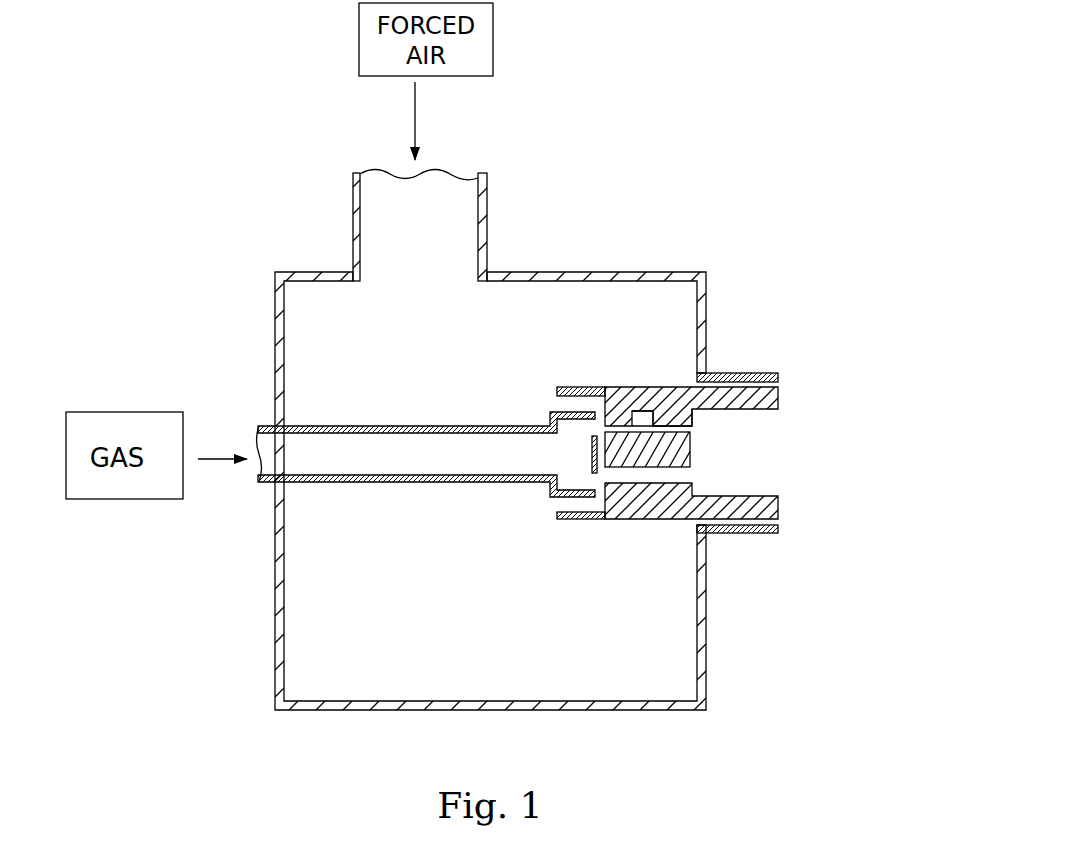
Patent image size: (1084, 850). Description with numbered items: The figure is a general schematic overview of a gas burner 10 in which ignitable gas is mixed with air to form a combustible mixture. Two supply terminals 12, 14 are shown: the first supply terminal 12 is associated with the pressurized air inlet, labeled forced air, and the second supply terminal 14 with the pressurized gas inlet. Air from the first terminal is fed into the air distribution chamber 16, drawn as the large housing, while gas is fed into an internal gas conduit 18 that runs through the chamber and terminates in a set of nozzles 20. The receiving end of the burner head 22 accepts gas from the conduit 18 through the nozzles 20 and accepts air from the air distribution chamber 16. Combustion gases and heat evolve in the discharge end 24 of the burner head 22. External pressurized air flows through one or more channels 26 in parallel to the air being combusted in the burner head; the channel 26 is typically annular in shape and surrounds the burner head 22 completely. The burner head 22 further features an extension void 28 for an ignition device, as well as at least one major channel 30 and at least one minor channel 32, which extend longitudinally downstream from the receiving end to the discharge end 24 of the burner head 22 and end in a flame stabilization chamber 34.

The gas burner 10 is at (587, 230).
The supply terminal 12 is at (383, 170).
The supply terminal 14 is at (256, 470).
The air distribution chamber 16 is at (303, 642).
The internal gas conduit 18 is at (490, 482).
The nozzles 20 is at (592, 474).
The burner head 22 is at (633, 525).
The discharge end 24 is at (782, 403).
The channel 26 is at (778, 380).
The extension void 28 is at (632, 415).
The major channel 30 is at (655, 467).
The minor channel 32 is at (675, 422).
The flame stabilization chamber 34 is at (770, 450).